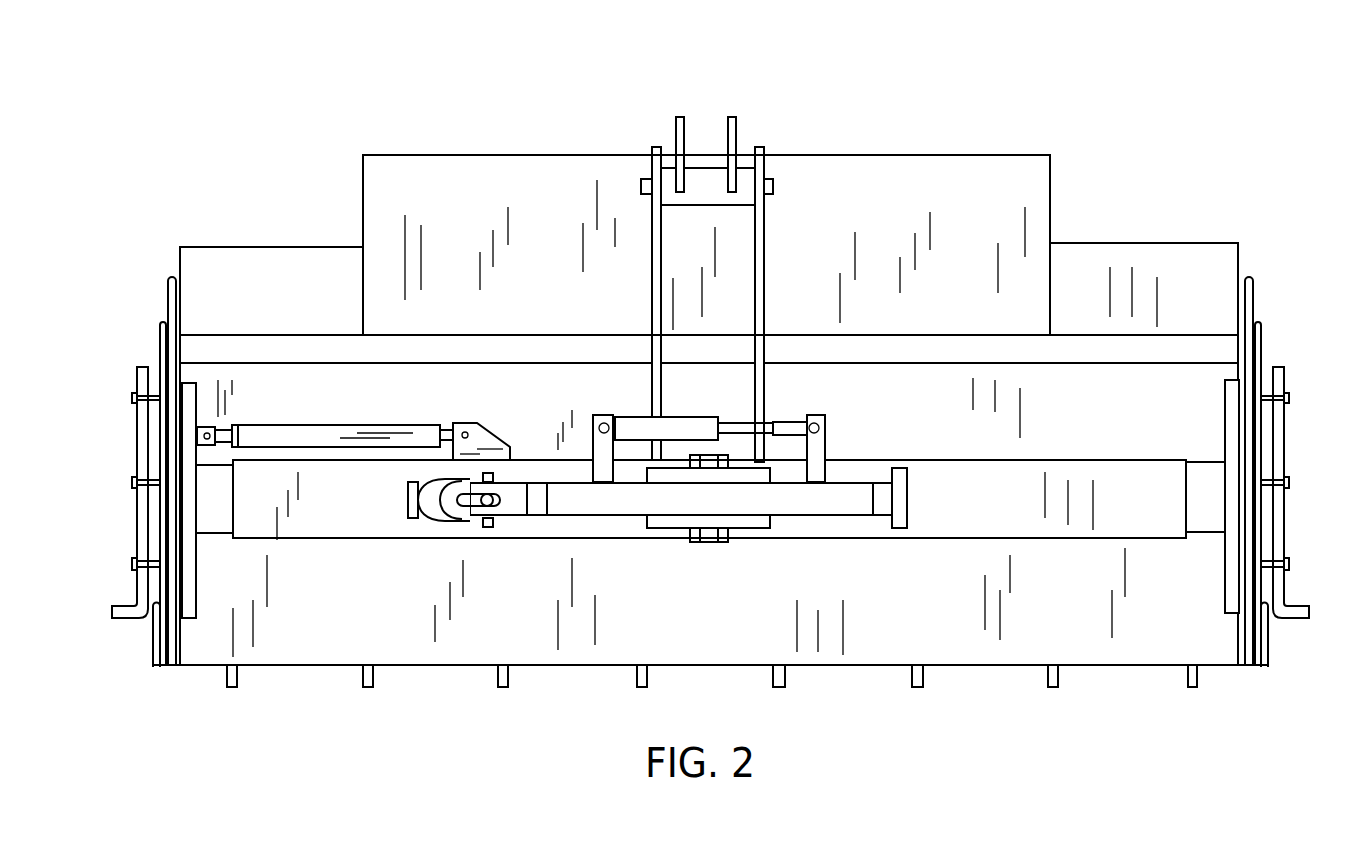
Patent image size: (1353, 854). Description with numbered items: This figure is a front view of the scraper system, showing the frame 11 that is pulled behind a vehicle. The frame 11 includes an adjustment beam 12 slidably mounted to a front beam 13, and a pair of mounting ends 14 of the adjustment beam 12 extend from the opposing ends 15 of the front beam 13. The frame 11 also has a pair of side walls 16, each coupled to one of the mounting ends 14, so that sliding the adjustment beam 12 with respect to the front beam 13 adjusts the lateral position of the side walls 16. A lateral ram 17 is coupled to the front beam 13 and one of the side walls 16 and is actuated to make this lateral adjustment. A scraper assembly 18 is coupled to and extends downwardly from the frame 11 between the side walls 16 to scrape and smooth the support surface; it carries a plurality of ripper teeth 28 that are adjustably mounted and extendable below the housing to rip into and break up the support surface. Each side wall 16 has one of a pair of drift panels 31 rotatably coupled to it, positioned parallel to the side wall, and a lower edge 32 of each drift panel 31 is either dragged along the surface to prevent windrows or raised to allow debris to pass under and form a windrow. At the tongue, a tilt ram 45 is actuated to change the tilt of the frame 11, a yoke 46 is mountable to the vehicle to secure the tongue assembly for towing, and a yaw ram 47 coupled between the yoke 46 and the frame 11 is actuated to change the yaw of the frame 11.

The frame 11 is at (1125, 550).
The adjustment beam 12 is at (1205, 523).
The front beam 13 is at (1058, 523).
The mounting ends 14 is at (195, 498).
The opposing ends 15 is at (1185, 492).
The side walls 16 is at (180, 435).
The lateral ram 17 is at (295, 435).
The scraper assembly 18 is at (1048, 154).
The ripper teeth 28 is at (917, 687).
The drift panels 31 is at (165, 613).
The lower edge 32 is at (165, 667).
The tilt ram 45 is at (637, 440).
The yoke 46 is at (537, 513).
The yaw ram 47 is at (430, 510).